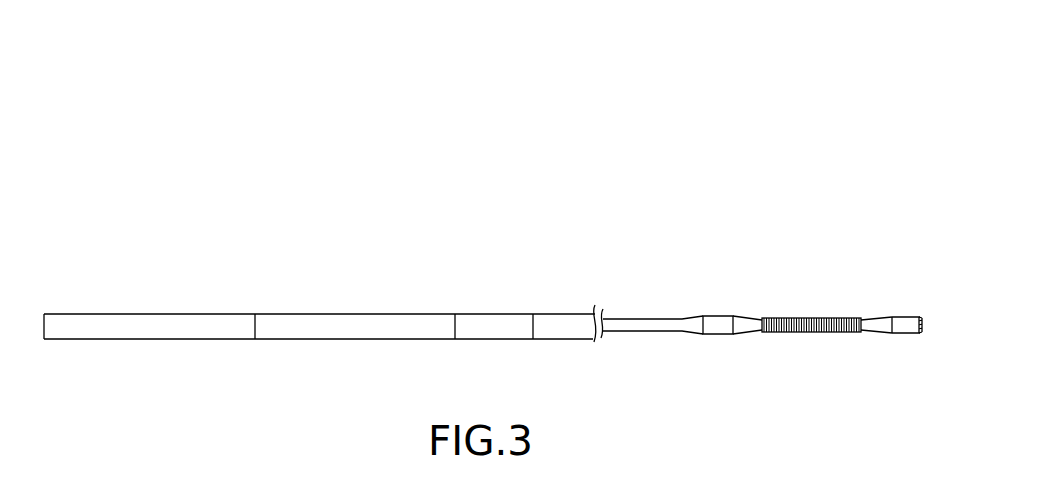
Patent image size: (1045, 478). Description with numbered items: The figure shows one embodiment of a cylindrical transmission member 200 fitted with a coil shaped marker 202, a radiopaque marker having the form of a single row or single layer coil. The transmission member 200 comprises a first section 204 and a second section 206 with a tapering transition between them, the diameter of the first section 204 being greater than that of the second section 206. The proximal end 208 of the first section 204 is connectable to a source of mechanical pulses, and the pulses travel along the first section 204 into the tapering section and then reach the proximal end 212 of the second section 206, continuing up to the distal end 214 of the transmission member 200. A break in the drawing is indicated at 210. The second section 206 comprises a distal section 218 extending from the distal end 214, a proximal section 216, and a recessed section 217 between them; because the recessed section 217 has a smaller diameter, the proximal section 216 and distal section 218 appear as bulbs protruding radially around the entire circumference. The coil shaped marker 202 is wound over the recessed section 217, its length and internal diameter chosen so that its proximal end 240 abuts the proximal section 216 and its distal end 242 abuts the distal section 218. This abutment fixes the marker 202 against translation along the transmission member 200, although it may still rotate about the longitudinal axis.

The transmission member 200 is at (675, 92).
The coil shaped marker 202 is at (815, 329).
The first section 204 is at (355, 301).
The second section 206 is at (798, 171).
The proximal end 208 is at (42, 330).
The break / transition 210 is at (598, 301).
The proximal end 212 is at (597, 344).
The distal end 214 is at (924, 321).
The proximal section 216 is at (717, 323).
The recessed section 217 is at (776, 341).
The distal section 218 is at (901, 317).
The proximal end 240 is at (779, 315).
The distal end 242 is at (858, 315).